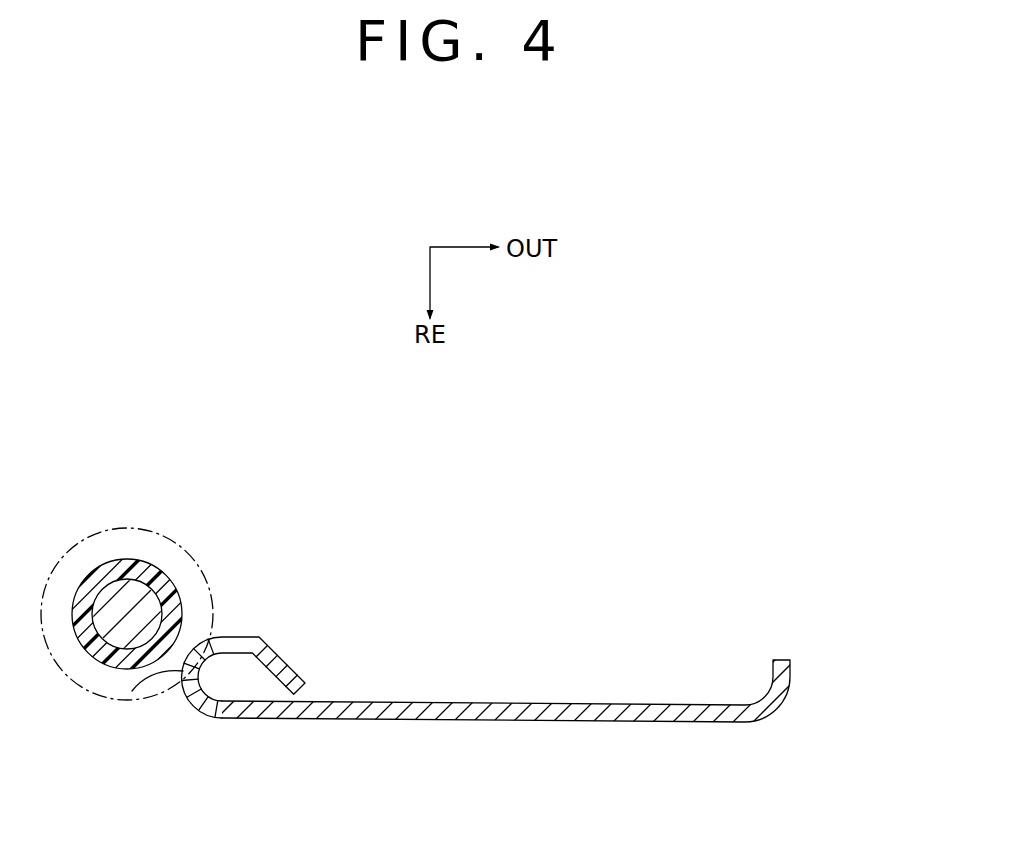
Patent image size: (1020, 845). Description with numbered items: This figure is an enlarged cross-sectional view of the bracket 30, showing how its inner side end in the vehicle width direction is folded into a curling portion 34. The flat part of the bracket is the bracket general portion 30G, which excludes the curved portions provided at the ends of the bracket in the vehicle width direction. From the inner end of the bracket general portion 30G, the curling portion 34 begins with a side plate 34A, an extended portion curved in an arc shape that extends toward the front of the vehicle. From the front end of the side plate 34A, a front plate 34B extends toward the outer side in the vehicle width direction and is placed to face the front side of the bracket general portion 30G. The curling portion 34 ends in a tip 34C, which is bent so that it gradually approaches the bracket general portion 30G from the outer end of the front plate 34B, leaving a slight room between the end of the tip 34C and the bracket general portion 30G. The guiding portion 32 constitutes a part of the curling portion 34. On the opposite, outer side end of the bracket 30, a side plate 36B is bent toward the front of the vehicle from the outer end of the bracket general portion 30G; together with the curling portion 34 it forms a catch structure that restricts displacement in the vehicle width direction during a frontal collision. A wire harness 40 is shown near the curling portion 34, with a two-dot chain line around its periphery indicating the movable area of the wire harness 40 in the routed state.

The bracket 30 is at (690, 618).
The bracket general portion 30G is at (492, 722).
The guiding portion 32 is at (132, 691).
The curling portion 34 is at (245, 618).
The side plate 34A is at (182, 693).
The front plate 34B is at (228, 636).
The tip 34C is at (287, 663).
The side plate 36B is at (793, 672).
The wire harness 40 is at (127, 557).